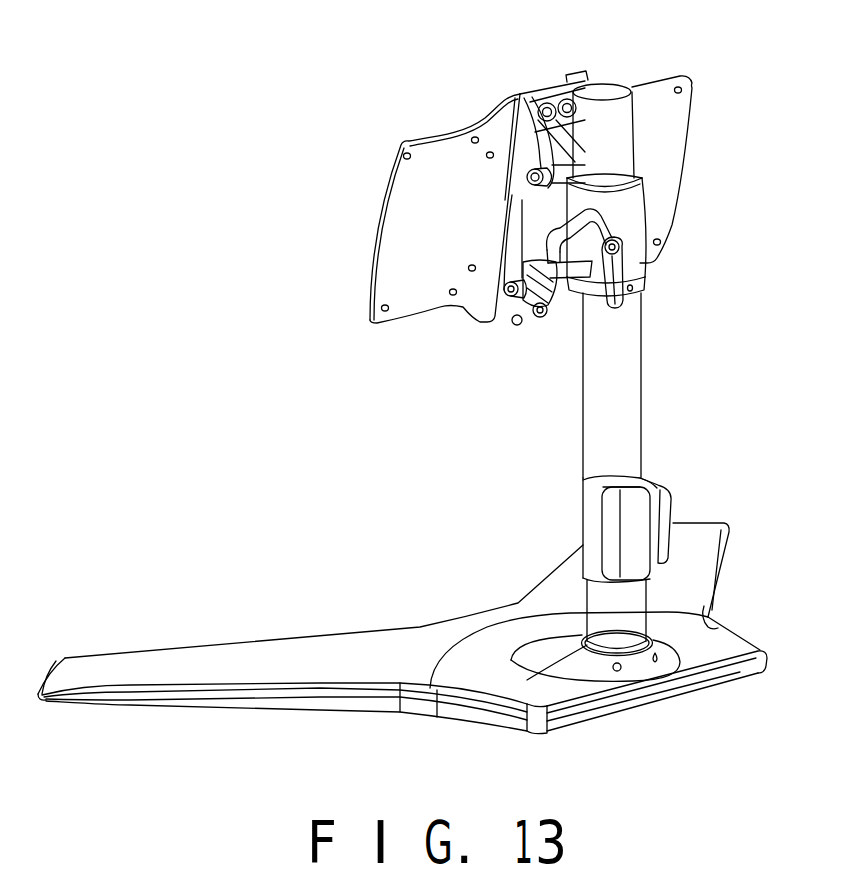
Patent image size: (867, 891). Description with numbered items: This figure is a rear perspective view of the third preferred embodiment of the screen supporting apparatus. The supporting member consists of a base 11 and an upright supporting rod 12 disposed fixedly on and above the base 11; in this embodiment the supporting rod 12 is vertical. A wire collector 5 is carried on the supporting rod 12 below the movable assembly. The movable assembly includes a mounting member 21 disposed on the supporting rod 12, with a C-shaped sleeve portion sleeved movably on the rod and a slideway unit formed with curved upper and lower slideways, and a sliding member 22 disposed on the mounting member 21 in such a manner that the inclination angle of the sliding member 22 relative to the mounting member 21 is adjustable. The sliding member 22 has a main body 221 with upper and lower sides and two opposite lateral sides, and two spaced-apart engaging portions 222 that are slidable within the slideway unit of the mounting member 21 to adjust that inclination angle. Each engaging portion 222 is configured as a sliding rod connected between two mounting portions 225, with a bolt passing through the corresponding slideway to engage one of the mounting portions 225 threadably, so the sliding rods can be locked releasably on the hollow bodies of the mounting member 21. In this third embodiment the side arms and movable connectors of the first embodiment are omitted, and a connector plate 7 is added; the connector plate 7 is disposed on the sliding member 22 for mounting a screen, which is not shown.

The base 11 is at (359, 648).
The supporting rod 12 is at (627, 402).
The mounting member 21 is at (632, 220).
The sliding member 22 is at (512, 333).
The main body 221 is at (555, 95).
The engaging portions 222 is at (527, 177).
The mounting portions 225 is at (491, 321).
The wire collector 5 is at (590, 517).
The connector plate 7 is at (398, 221).